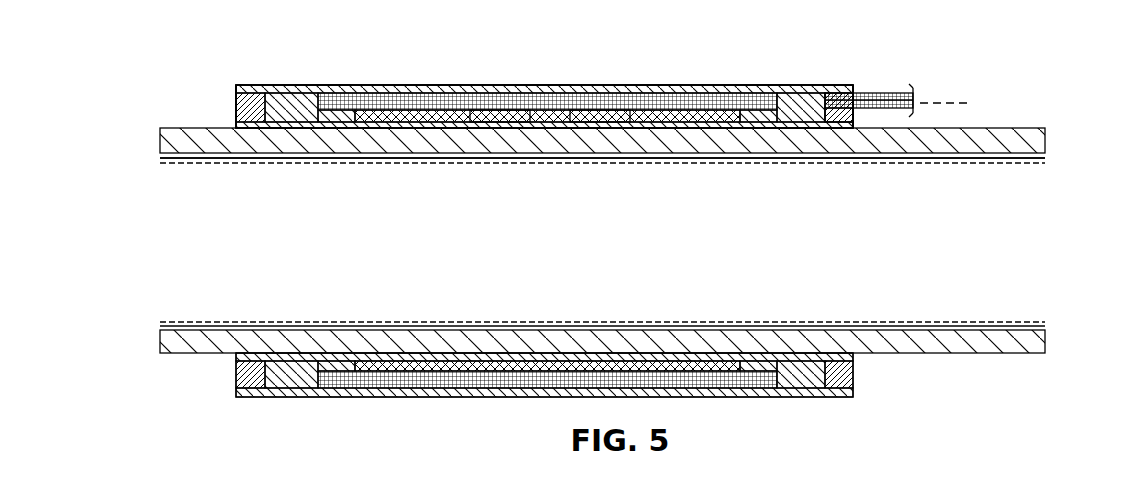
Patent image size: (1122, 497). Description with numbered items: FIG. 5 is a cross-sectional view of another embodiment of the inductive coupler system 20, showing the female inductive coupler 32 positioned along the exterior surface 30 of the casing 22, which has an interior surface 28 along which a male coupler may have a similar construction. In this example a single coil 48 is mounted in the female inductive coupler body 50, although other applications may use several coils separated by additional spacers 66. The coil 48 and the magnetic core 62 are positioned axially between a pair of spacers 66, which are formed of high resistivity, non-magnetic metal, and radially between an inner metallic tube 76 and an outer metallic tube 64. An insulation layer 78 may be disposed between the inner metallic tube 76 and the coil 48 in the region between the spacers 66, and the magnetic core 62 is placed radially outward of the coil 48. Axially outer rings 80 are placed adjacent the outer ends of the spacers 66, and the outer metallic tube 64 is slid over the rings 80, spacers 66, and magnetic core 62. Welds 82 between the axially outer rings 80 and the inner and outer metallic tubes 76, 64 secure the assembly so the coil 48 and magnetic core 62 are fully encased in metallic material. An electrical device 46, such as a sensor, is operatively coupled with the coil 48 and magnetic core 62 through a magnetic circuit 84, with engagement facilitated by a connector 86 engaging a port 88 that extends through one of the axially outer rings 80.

The inductive coupler system 20 is at (946, 60).
The casing 22 is at (186, 128).
The interior surface 28 is at (180, 327).
The exterior surface 30 is at (180, 355).
The female inductive coupler 32 is at (408, 76).
The electrical device 46 is at (965, 103).
The coil 48 is at (556, 112).
The female inductive coupler body 50 is at (693, 80).
The magnetic core 62 is at (455, 100).
The outer metallic tube 64 is at (645, 88).
The spacers 66 is at (296, 100).
The inner metallic tube 76 is at (590, 112).
The insulation layer 78 is at (500, 112).
The axially outer rings 80 is at (244, 98).
The welds 82 is at (240, 112).
The magnetic circuit 84 is at (840, 95).
The connector 86 is at (906, 90).
The port 88 is at (856, 112).